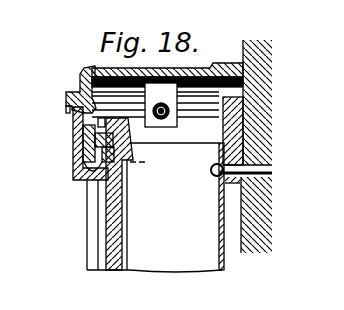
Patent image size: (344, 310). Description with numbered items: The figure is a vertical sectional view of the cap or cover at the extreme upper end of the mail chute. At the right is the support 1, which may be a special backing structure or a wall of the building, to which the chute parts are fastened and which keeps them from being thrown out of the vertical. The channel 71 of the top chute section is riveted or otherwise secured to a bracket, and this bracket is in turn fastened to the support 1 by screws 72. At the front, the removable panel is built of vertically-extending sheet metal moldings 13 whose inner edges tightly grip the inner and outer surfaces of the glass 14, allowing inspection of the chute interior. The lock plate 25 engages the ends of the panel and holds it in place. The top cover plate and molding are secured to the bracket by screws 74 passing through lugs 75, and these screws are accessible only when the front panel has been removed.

The support 1 is at (247, 250).
The moldings 13 is at (92, 250).
The glass 14 is at (113, 253).
The lock plate 25 is at (80, 148).
The channel 71 is at (219, 233).
The screws 72 is at (211, 173).
The screws 74 is at (168, 128).
The lugs 75 is at (154, 95).